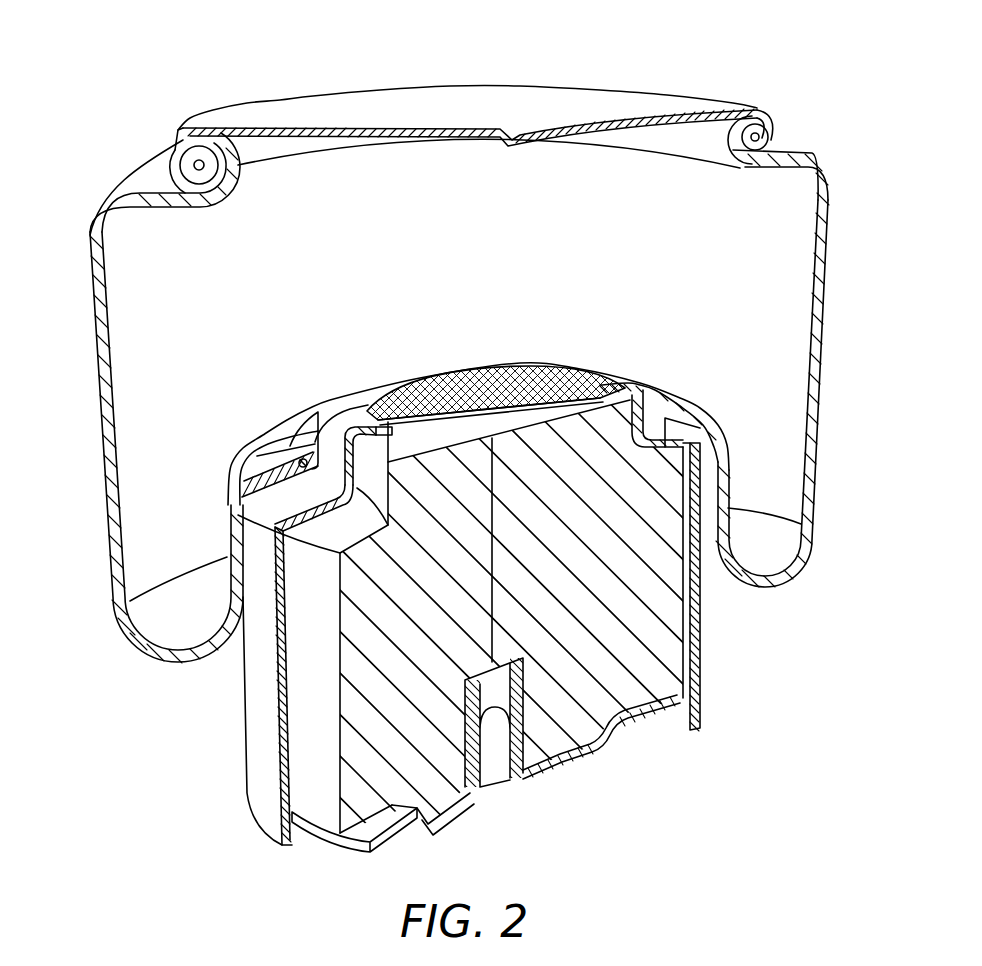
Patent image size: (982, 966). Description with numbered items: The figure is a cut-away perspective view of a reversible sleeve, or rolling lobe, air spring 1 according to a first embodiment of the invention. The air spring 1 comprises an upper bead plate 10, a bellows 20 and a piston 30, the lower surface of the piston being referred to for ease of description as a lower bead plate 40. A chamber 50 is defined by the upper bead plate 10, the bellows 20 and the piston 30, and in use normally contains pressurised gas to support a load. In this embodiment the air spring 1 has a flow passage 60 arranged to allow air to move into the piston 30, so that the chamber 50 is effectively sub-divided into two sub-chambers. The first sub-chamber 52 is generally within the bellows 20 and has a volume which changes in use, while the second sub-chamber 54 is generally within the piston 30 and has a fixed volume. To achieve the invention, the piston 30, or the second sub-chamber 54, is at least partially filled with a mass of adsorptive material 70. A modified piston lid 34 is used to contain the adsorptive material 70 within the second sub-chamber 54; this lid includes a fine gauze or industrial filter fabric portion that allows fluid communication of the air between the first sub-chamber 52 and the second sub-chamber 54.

The air spring 1 is at (223, 54).
The upper bead plate 10 is at (486, 101).
The bellows 20 is at (818, 393).
The piston 30 is at (699, 635).
The modified piston lid 34 is at (467, 385).
The lower bead plate 40 is at (571, 762).
The chamber 50 is at (425, 253).
The first sub-chamber 52 is at (150, 433).
The second sub-chamber 54 is at (320, 757).
The flow passage 60 is at (600, 387).
The adsorptive material 70 is at (437, 433).